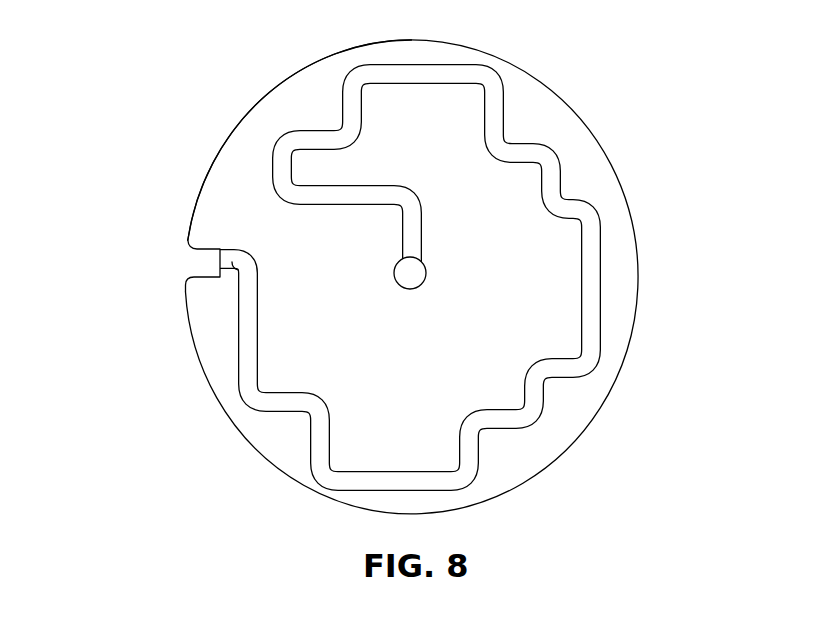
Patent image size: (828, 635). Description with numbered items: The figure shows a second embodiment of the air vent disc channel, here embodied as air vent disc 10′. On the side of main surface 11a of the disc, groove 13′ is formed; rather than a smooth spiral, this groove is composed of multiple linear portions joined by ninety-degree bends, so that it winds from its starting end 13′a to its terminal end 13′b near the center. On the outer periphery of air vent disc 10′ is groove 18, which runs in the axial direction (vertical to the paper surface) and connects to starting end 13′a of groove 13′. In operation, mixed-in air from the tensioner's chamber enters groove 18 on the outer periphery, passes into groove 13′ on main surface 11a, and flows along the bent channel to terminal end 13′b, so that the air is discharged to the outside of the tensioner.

The air vent disc 10′ is at (577, 58).
The main surface 11a is at (308, 113).
The groove 13′ is at (602, 214).
The starting end 13′a is at (232, 270).
The terminal end 13′b is at (413, 277).
The groove 18 is at (188, 262).